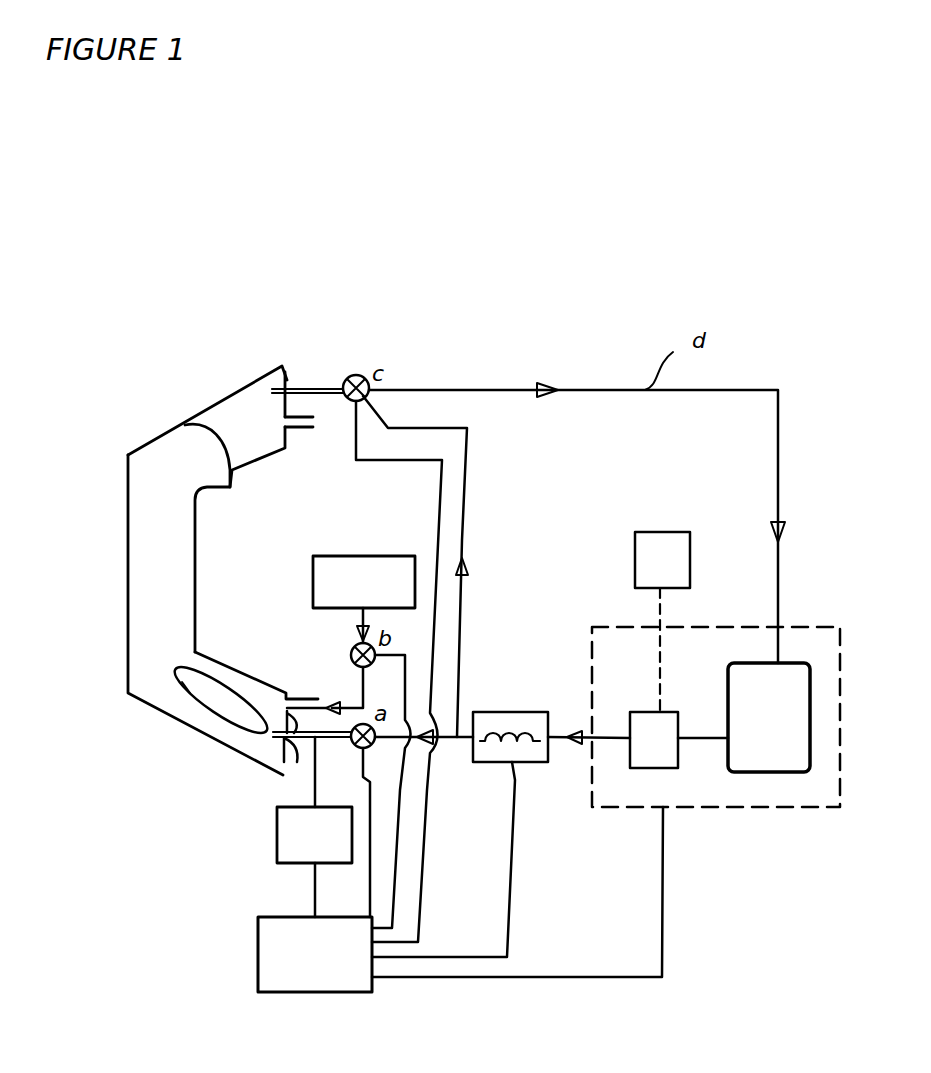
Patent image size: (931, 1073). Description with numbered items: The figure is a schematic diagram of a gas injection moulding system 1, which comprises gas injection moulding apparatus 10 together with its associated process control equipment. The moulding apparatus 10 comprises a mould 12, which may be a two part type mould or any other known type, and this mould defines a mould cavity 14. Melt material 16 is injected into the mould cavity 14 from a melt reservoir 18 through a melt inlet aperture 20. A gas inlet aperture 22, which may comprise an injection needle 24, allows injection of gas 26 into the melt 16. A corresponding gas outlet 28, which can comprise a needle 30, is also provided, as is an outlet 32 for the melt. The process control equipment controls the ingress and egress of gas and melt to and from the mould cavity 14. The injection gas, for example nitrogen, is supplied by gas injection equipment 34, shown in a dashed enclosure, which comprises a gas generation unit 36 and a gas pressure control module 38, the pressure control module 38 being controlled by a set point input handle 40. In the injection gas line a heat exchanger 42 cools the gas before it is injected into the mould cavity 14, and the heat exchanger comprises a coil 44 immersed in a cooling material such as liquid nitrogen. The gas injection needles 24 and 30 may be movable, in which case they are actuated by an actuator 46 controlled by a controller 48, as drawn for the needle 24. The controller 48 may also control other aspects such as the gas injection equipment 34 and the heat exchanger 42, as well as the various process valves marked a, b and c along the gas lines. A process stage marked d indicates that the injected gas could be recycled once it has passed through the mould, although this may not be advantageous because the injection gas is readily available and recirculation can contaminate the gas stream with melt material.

The gas injection moulding system 1 is at (483, 306).
The gas injection moulding apparatus 10 is at (90, 478).
The mould 12 is at (213, 400).
The mould cavity 14 is at (237, 417).
The melt material 16 is at (172, 555).
The melt reservoir 18 is at (383, 553).
The melt inlet aperture 20 is at (290, 698).
The gas inlet aperture 22 is at (285, 742).
The injection needle 24 is at (283, 730).
The gas 26 is at (167, 665).
The gas outlet 28 is at (287, 372).
The needle 30 is at (323, 383).
The outlet 32 is at (292, 428).
The gas injection equipment 34 is at (758, 808).
The gas generation unit 36 is at (769, 717).
The gas pressure control module 38 is at (679, 740).
The set point input handle 40 is at (662, 622).
The heat exchanger 42 is at (508, 710).
The coil 44 is at (533, 750).
The actuator 46 is at (314, 827).
The controller 48 is at (460, 877).